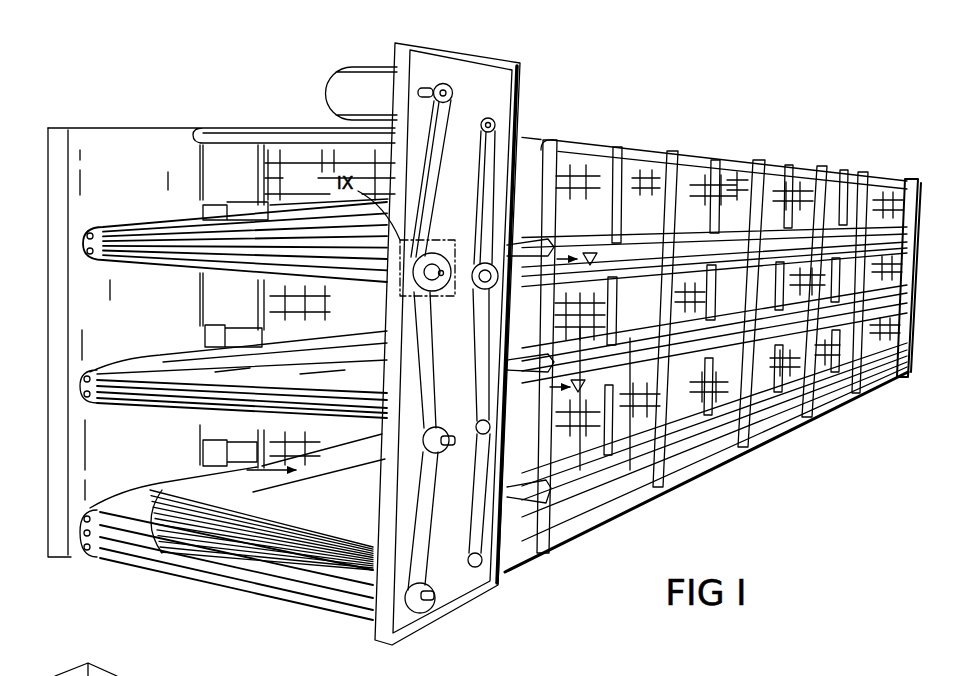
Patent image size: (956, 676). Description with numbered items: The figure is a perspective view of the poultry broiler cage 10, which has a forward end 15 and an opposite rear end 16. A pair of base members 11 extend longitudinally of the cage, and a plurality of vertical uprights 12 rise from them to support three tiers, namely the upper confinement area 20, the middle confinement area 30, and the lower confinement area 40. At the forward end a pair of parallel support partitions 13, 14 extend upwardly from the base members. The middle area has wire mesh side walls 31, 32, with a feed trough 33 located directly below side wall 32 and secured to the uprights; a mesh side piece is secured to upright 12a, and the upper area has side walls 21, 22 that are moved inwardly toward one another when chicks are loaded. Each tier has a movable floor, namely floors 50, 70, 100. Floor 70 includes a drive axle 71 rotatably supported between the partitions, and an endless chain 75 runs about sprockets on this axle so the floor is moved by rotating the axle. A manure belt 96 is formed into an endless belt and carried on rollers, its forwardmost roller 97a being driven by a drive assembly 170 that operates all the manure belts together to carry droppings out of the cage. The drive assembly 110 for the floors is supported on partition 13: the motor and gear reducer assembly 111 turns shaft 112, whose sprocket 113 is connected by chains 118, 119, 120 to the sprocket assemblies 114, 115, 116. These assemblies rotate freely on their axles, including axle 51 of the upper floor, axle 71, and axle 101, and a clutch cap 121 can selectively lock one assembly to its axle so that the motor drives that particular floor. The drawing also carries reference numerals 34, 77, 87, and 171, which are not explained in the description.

The poultry broiler cage 10 is at (262, 110).
The base members 11 is at (686, 472).
The vertical uprights 12 is at (820, 166).
The upright 12a is at (567, 137).
The support partition 13 is at (98, 148).
The support partition 14 is at (470, 78).
The forward end 15 is at (349, 622).
The rear end 16 is at (903, 385).
The upper confinement area 20 is at (282, 180).
The side wall 21 is at (310, 171).
The side wall 22 is at (657, 206).
The middle confinement area 30 is at (696, 268).
The side wall 31 is at (290, 298).
The side wall 32 is at (579, 328).
The feed trough 33 is at (630, 338).
The short posts 34 is at (804, 288).
The lower confinement area 40 is at (232, 462).
The movable floor 50 is at (198, 216).
The axle 51 is at (447, 279).
The movable floor 70 is at (205, 341).
The drive member or axle 71 is at (447, 448).
The chain 75 is at (150, 356).
The mesh wall 77 is at (718, 335).
The surface 87 is at (365, 355).
The manure belt 96 is at (325, 380).
The forwardmost roller 97a is at (490, 426).
The movable floor 100 is at (190, 472).
The axle 101 is at (434, 600).
The drive assembly 110 is at (500, 94).
The motor and gear reducer assembly 111 is at (346, 106).
The shaft 112 is at (428, 87).
The sprocket 113 is at (447, 84).
The sprocket assembly 114 is at (442, 266).
The sprocket assembly 115 is at (434, 468).
The sprocket assembly 116 is at (421, 606).
The chain 118 is at (449, 175).
The chain 119 is at (442, 358).
The chain 120 is at (468, 561).
The clutch cap 121 is at (472, 254).
The drive assembly 170 is at (506, 128).
The axle 171 is at (494, 118).